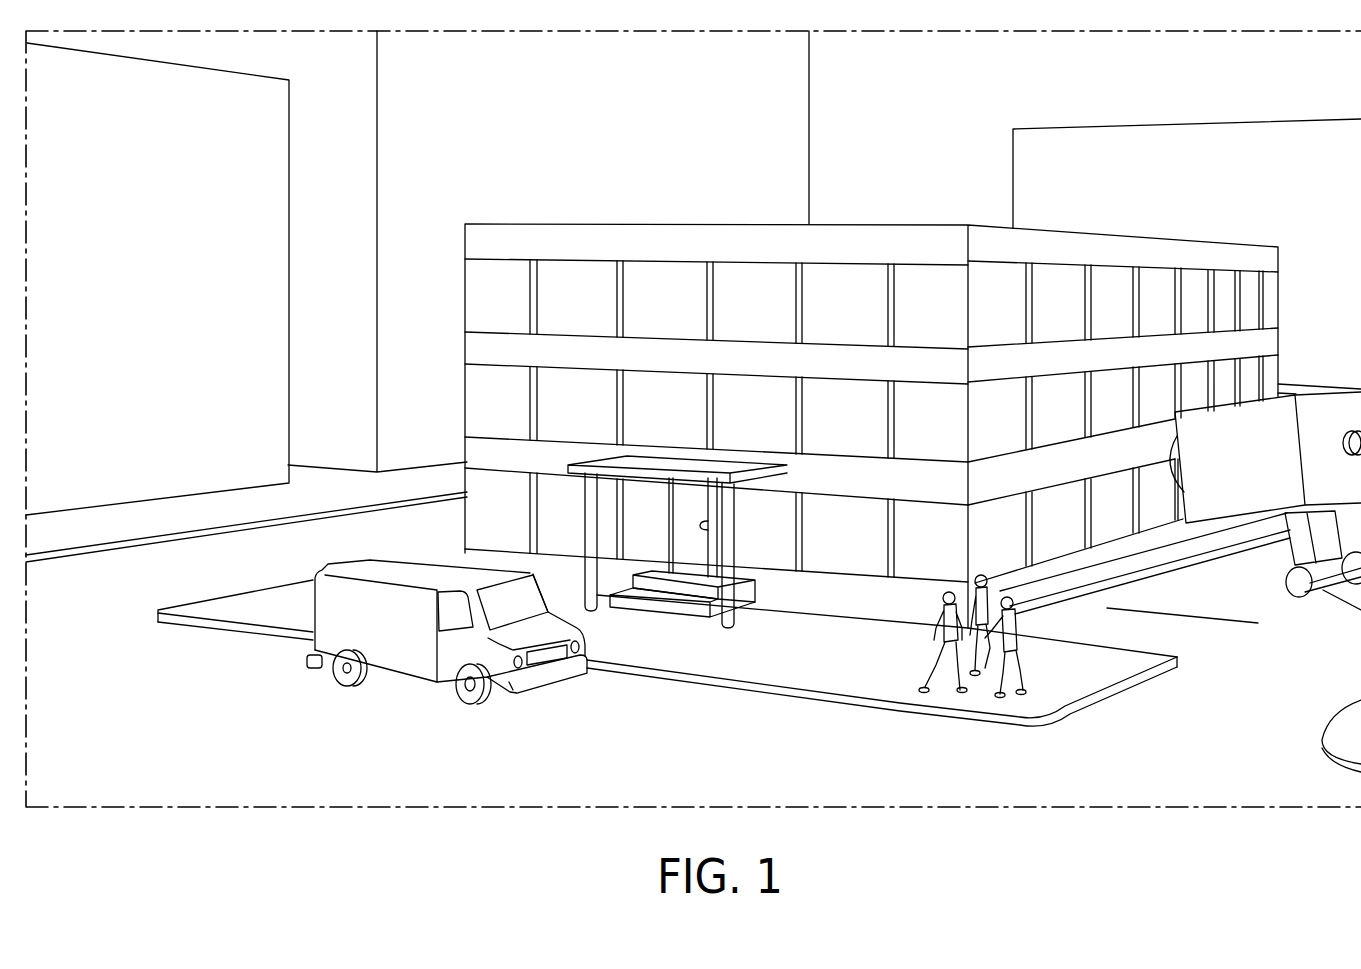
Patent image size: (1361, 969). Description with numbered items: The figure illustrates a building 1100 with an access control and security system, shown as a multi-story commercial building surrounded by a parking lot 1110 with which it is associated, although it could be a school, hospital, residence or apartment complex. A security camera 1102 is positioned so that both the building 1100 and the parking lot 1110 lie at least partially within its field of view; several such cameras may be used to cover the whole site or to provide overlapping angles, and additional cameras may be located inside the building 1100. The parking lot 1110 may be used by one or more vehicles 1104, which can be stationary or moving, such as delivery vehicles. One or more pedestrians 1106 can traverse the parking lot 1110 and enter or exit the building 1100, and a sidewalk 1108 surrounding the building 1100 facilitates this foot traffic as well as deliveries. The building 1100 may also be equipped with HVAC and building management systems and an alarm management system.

The building 1100 is at (694, 203).
The security camera 1102 is at (1360, 374).
The vehicle 1104 is at (358, 568).
The pedestrian 1106 is at (965, 706).
The sidewalk 1108 is at (1165, 645).
The parking lot 1110 is at (1237, 727).